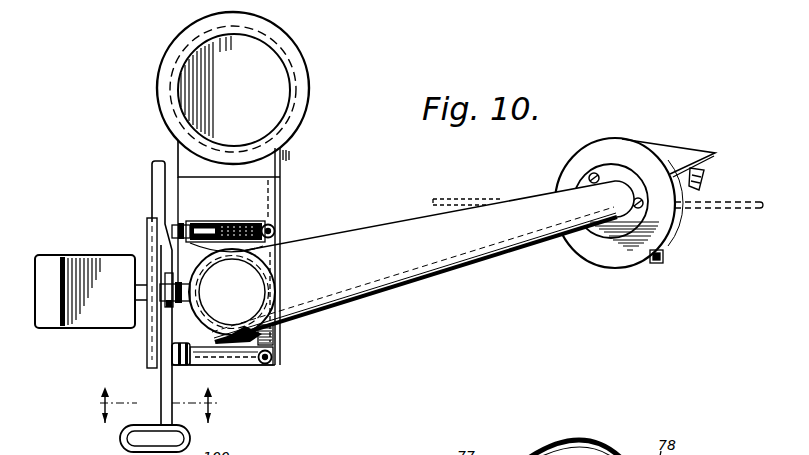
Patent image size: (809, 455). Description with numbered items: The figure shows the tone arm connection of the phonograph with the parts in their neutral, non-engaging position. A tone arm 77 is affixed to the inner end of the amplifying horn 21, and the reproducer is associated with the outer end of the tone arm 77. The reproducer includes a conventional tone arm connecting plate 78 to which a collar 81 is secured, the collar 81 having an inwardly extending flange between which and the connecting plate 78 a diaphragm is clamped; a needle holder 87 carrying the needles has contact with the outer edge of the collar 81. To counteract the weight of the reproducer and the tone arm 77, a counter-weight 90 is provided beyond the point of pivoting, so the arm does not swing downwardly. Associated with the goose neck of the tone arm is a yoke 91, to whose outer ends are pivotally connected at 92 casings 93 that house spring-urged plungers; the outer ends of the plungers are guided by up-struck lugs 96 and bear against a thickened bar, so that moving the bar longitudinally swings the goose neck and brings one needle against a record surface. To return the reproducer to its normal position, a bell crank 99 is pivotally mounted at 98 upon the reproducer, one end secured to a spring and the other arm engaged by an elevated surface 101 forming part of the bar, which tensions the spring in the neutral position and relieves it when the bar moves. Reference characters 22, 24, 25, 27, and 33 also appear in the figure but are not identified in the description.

The amplifying horn 21 is at (160, 93).
The bracket block 22 is at (240, 252).
The plunger 24 is at (207, 230).
The spring 25 is at (241, 223).
The lever 27 is at (155, 185).
The rod 33 is at (741, 206).
The tone arm 77 is at (423, 262).
The tone arm connecting plate 78 is at (577, 156).
The collar 81 is at (668, 149).
The needle holder 87 is at (705, 178).
The counter-weight 90 is at (36, 300).
The yoke 91 is at (268, 346).
The pivotal connection 92 is at (270, 362).
The casing 93 is at (228, 354).
The up-struck lug 96 is at (180, 367).
The pivot 98 is at (179, 304).
The bell crank 99 is at (166, 305).
The elevated surface 101 is at (167, 277).